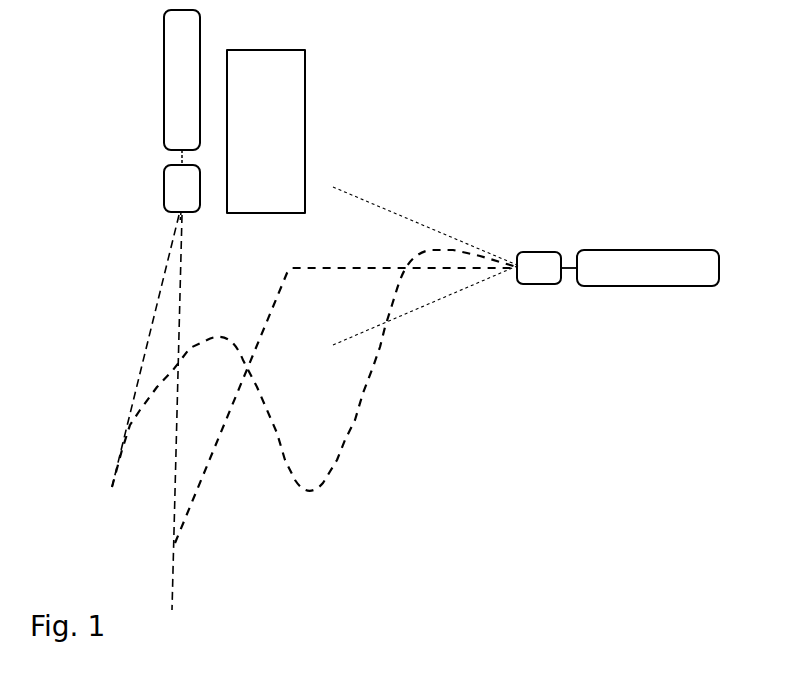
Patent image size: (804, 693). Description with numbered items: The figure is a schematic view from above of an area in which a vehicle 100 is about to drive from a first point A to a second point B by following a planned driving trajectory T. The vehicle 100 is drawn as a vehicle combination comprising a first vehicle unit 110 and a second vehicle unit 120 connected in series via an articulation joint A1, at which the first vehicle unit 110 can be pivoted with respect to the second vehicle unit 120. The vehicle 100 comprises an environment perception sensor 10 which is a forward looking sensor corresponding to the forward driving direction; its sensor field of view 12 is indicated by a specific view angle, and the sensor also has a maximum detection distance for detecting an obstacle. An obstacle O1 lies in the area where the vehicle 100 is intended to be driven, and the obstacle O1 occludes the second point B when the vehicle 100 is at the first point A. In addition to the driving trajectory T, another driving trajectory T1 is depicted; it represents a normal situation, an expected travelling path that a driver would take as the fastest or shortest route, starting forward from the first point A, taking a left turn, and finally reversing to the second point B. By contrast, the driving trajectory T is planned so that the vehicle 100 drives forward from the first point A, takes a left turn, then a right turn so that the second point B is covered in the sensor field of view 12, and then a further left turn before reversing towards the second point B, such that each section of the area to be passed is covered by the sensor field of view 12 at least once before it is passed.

The environment perception sensor 10 is at (503, 280).
The sensor field of view 12 is at (430, 303).
The vehicle 100 is at (623, 302).
The first vehicle unit 110 is at (537, 250).
The second vehicle unit 120 is at (624, 250).
The first point A is at (609, 248).
The articulation joint A1 is at (570, 288).
The second point B is at (140, 202).
The obstacle O1 is at (290, 147).
The driving trajectory T is at (340, 457).
The driving trajectory T1 is at (188, 497).